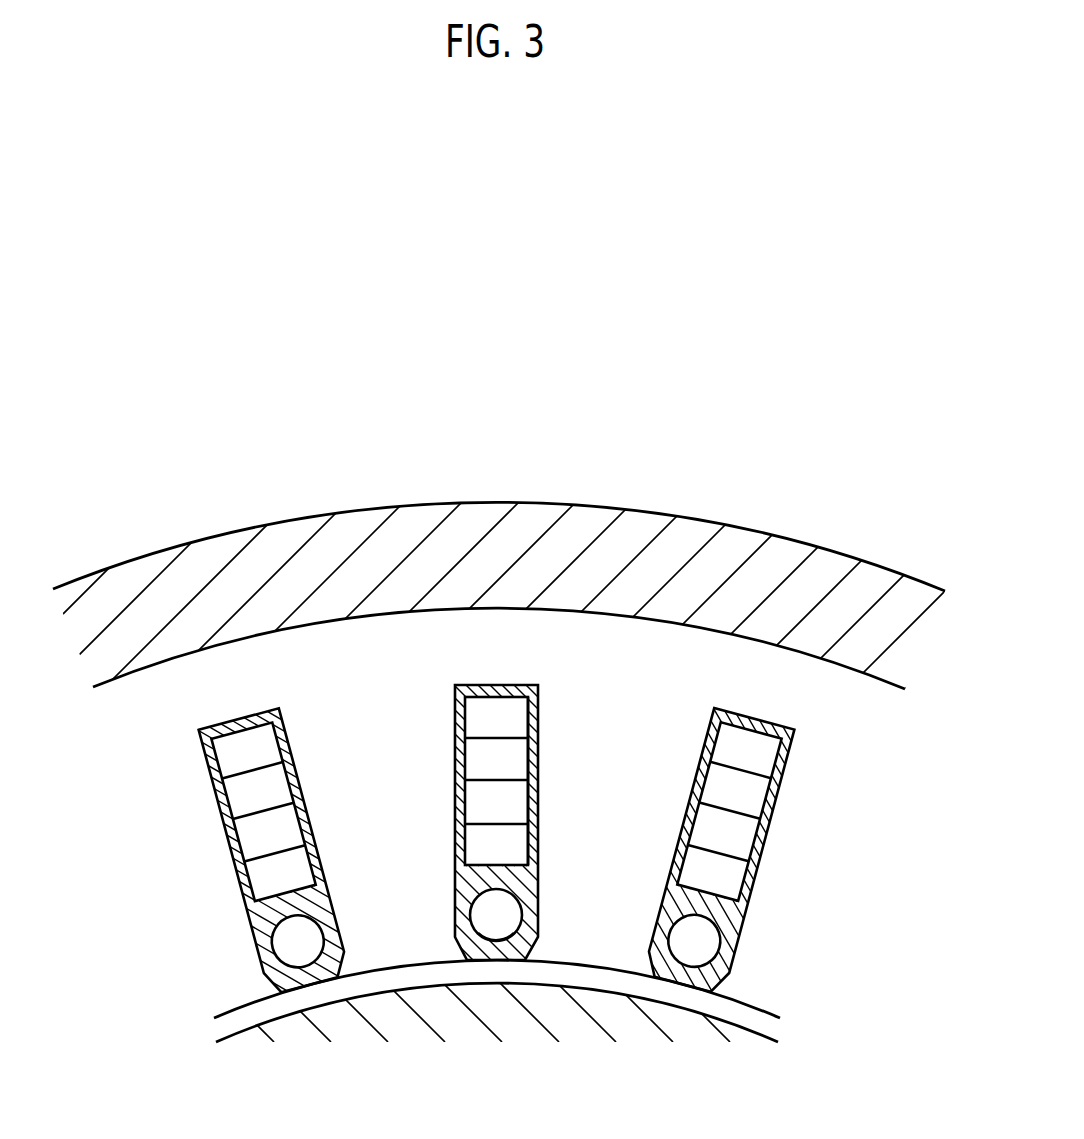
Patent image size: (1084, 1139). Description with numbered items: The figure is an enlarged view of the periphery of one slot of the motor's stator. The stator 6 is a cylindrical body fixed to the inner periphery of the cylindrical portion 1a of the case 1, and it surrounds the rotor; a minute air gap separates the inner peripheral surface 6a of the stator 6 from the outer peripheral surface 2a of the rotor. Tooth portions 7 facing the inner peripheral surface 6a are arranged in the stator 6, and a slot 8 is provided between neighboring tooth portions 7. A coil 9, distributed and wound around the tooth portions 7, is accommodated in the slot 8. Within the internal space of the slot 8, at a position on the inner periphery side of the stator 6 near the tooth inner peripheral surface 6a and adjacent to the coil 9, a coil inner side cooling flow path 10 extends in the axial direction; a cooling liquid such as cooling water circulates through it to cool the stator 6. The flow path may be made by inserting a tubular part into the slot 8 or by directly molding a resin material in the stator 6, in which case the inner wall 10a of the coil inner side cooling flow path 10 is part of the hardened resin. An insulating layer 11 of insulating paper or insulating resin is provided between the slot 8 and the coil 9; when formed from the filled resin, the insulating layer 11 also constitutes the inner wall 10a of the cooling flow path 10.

The case 1 is at (222, 537).
The cylindrical portion 1a is at (499, 498).
The outer peripheral surface 2a is at (745, 1020).
The stator 6 is at (288, 627).
The inner peripheral surface 6a is at (238, 1012).
The tooth portion 7 is at (385, 815).
The slot 8 is at (489, 688).
The coil 9 is at (507, 757).
The coil inner side cooling flow path 10 is at (507, 916).
The inner wall 10a is at (482, 932).
The insulating layer 11 is at (537, 801).